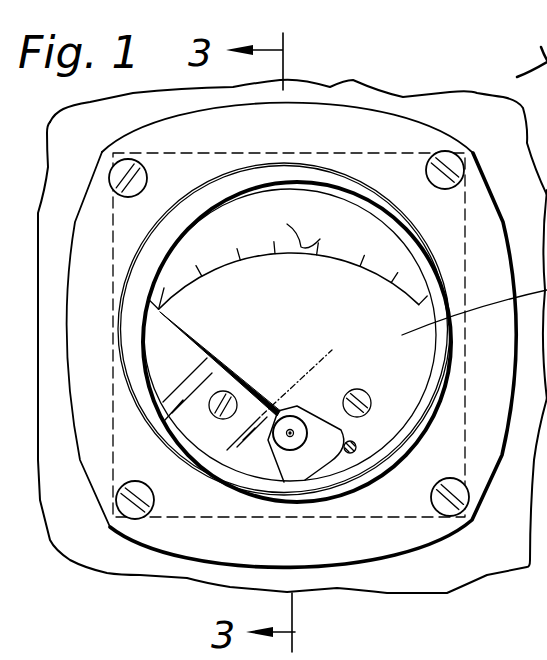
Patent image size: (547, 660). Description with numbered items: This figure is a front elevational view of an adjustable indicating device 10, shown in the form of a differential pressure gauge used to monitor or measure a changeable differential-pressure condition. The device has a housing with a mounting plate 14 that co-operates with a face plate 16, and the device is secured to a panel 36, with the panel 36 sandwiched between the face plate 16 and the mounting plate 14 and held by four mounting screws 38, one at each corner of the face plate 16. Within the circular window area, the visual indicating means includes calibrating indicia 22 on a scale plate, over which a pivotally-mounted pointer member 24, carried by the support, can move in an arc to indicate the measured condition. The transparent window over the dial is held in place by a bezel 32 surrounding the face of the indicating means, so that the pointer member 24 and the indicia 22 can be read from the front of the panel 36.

The indicating device 10 is at (375, 102).
The mounting plate 14 is at (468, 262).
The face plate 16 is at (488, 428).
The calibrating indicia 22 is at (306, 222).
The pointer member 24 is at (243, 390).
The bezel 32 is at (367, 486).
The panel 36 is at (123, 565).
The mounting screws 38 is at (120, 170).